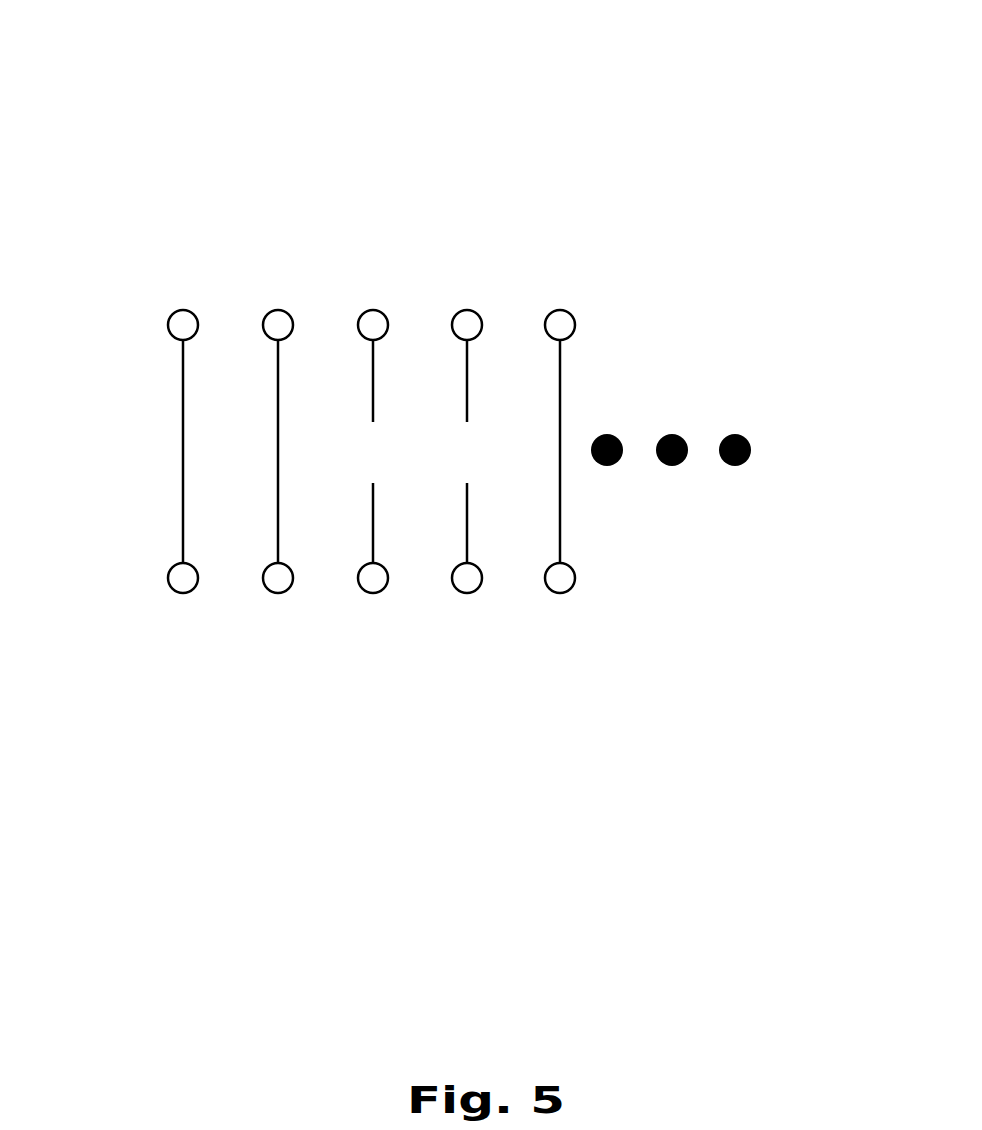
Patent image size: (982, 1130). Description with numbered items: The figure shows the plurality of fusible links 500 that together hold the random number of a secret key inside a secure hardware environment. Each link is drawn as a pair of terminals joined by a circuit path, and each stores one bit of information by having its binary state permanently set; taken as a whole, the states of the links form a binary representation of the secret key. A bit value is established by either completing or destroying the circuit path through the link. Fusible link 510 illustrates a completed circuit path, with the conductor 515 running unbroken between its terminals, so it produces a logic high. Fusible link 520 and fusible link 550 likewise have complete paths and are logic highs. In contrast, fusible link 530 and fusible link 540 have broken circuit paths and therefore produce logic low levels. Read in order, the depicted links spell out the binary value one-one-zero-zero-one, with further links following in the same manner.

The plurality of fusible links 500 is at (885, 35).
The fusible link 510 is at (140, 510).
The switch connection line 515 is at (183, 498).
The fusible link 520 is at (282, 600).
The fusible link 530 is at (377, 600).
The fusible link 540 is at (472, 598).
The fusible link 550 is at (568, 600).